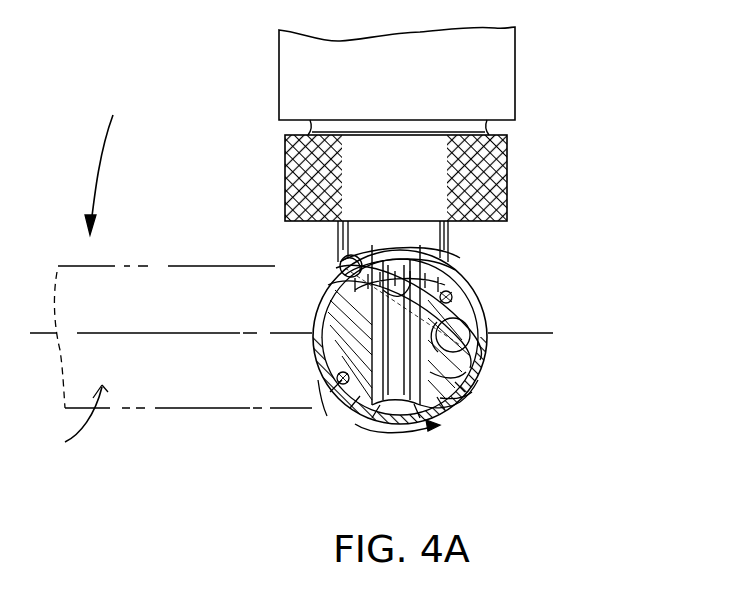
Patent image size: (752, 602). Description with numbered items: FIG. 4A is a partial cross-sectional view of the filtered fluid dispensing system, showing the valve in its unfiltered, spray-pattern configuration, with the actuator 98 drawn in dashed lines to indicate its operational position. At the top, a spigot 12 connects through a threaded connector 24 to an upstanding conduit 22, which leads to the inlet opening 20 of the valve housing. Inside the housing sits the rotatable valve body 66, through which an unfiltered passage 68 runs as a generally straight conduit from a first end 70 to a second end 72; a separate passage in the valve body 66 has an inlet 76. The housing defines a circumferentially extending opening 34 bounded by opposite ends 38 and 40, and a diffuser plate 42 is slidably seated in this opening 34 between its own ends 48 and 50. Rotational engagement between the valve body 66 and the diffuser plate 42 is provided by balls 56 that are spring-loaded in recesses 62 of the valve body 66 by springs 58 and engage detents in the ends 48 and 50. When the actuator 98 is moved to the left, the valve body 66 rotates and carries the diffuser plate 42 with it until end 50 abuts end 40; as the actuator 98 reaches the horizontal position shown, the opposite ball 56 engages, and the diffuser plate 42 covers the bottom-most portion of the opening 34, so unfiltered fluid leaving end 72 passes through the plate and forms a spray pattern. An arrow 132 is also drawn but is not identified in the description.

The spigot 12 is at (500, 80).
The threaded connector 24 is at (508, 173).
The upstanding conduit 22 is at (456, 240).
The inlet opening 20 is at (458, 256).
The direction of motion 132 is at (100, 162).
The first end of unfiltered passage 70 is at (343, 265).
The end of opening 38 is at (334, 289).
The valve body 66 is at (338, 318).
The circumferentially extending opening 34 is at (330, 380).
The end of diffuser plate 48 is at (335, 405).
The recess 62 is at (317, 404).
The actuator 98 is at (69, 422).
The ball 56 is at (446, 294).
The spring 58 is at (470, 321).
The inlet of passage 76 is at (457, 346).
The unfiltered passage 68 is at (452, 383).
The end of diffuser plate 50 is at (455, 395).
The second end of unfiltered passage 72 is at (452, 405).
The diffuser plate 42 is at (447, 418).
The end of opening 40 is at (458, 405).